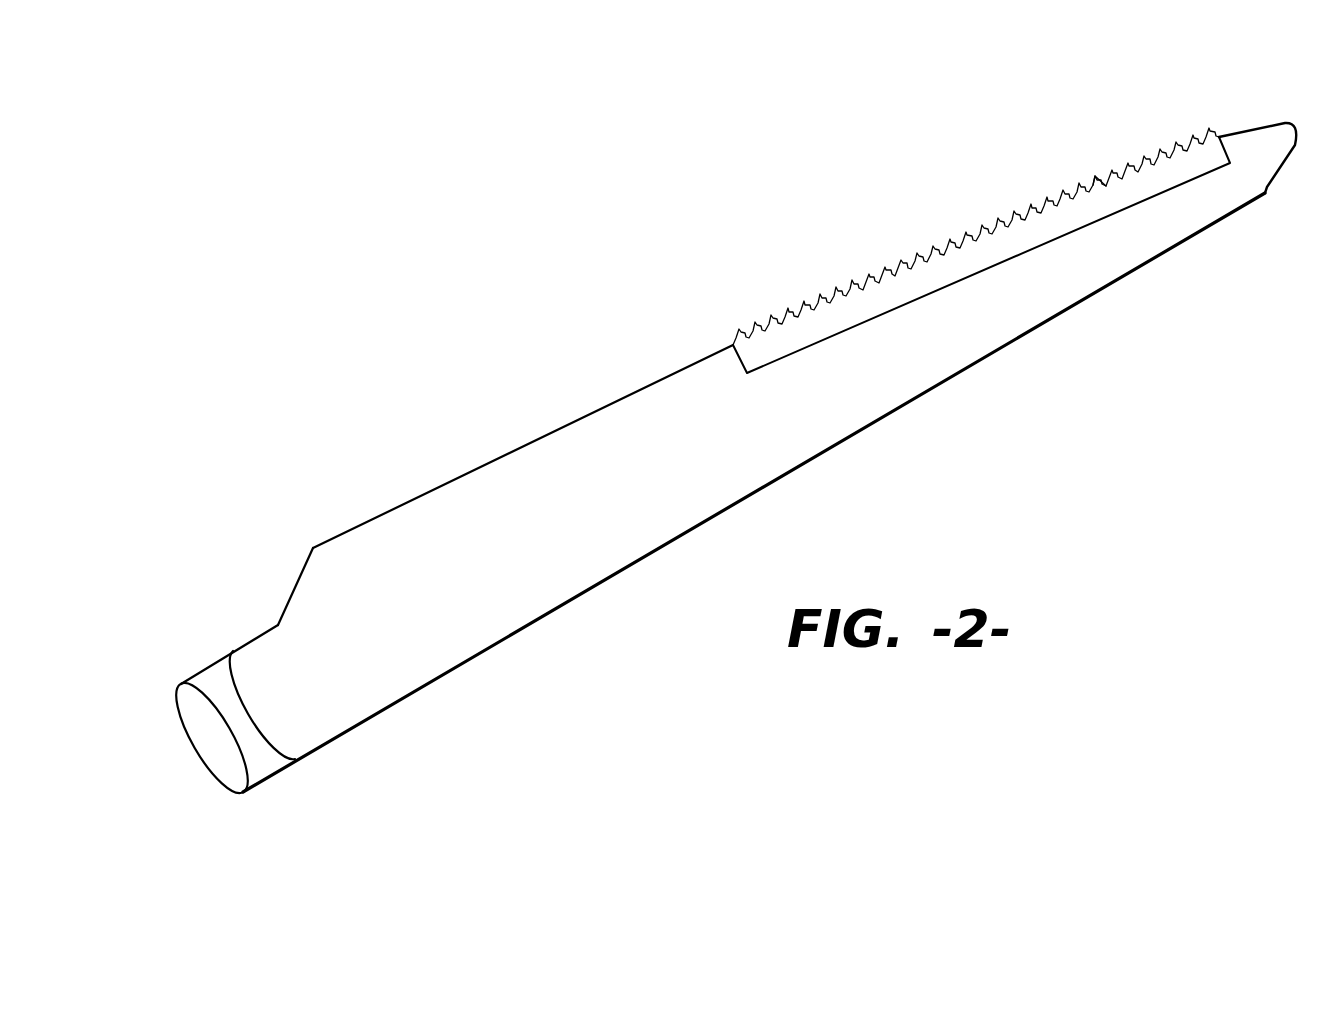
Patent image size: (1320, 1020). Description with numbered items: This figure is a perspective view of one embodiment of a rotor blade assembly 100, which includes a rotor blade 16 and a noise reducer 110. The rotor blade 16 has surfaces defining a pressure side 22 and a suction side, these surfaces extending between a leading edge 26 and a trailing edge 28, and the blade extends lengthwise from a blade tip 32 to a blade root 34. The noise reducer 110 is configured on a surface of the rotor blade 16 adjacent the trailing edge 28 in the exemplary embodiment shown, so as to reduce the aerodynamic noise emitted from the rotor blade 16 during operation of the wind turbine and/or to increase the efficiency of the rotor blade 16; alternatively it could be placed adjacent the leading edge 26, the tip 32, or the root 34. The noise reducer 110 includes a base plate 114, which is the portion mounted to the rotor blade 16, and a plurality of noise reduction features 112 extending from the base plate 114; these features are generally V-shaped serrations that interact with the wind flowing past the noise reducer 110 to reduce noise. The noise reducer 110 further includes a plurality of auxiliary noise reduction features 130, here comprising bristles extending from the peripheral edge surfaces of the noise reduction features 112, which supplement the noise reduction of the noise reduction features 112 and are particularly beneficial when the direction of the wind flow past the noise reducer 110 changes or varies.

The rotor blade assembly 100 is at (545, 317).
The rotor blade 16 is at (510, 437).
The pressure side 22 is at (420, 530).
The leading edge 26 is at (455, 668).
The trailing edge 28 is at (335, 537).
The blade tip 32 is at (1268, 135).
The blade root 34 is at (252, 735).
The noise reducer 110 is at (973, 215).
The noise reduction features 112 is at (883, 267).
The base plate 114 is at (1100, 203).
The auxiliary noise reduction features 130 is at (785, 310).